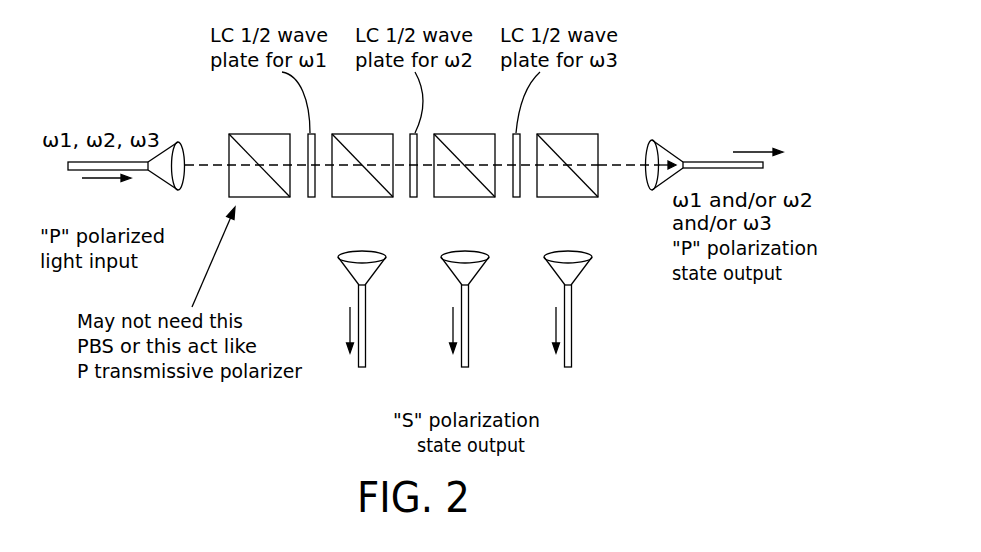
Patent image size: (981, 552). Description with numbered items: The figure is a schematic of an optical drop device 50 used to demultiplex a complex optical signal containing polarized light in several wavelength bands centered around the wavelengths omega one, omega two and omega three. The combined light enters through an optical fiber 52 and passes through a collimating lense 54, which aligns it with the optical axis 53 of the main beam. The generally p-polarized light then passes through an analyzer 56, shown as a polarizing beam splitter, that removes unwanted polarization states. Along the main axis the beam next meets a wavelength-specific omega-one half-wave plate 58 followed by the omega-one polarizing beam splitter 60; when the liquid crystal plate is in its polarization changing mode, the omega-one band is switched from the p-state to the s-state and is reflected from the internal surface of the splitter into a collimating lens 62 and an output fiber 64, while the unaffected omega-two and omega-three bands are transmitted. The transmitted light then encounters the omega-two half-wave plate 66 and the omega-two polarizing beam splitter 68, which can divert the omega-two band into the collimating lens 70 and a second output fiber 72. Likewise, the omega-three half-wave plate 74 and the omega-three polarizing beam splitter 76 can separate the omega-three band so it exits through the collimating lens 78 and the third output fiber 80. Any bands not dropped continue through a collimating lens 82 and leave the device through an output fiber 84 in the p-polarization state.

The optical drop device 50 is at (695, 378).
The optical fiber 52 is at (137, 173).
The optical axis 53 is at (624, 169).
The collimating lense 54 is at (181, 153).
The analyzer 56 is at (240, 134).
The ω1 half-wave plate 58 is at (311, 199).
The ω1 polarizing beam splitter 60 is at (343, 134).
The collimating lens 62 is at (340, 253).
The output fiber 64 is at (366, 357).
The ω2 half-wave plate 66 is at (413, 199).
The ω2 polarizing beam splitter 68 is at (447, 134).
The collimating lens 70 is at (443, 253).
The second output fiber 72 is at (469, 357).
The ω3 half-wave plate 74 is at (516, 199).
The ω3 polarizing beam splitter 76 is at (550, 134).
The collimating lens 78 is at (546, 253).
The third output fiber 80 is at (572, 357).
The collimating lens 82 is at (650, 156).
The output fiber 84 is at (697, 162).